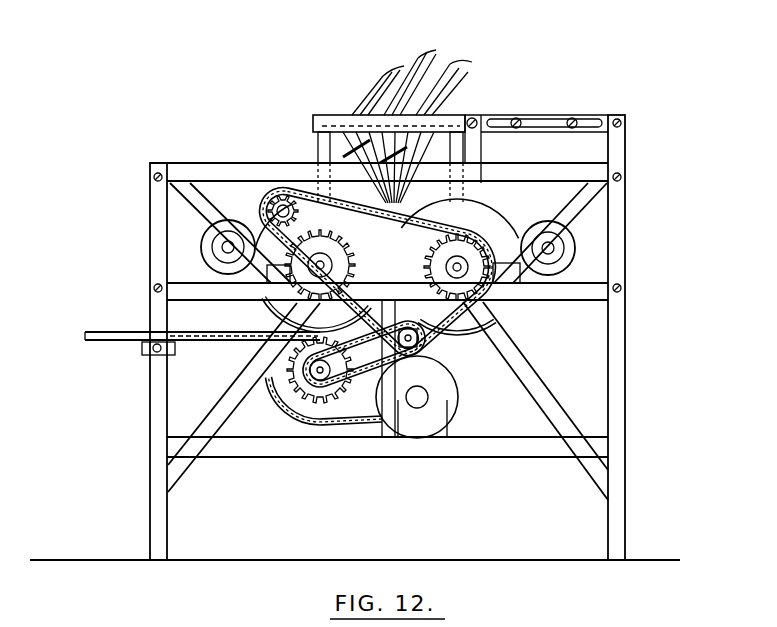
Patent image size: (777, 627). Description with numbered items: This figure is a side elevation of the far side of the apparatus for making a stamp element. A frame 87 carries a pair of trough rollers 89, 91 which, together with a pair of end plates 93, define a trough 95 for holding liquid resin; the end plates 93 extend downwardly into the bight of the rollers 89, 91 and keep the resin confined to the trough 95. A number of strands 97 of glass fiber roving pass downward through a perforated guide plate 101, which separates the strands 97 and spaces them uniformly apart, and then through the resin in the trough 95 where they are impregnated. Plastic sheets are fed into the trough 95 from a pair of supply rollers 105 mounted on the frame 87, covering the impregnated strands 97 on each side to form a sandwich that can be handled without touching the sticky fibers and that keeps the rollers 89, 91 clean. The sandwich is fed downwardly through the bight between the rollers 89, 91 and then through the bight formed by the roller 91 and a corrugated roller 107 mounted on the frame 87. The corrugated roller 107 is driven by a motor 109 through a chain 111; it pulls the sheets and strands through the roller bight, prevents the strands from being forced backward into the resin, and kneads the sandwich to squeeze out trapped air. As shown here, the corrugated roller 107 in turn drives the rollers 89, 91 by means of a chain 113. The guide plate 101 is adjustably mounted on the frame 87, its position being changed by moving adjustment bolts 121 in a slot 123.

The frame 87 is at (157, 410).
The trough roller 89 is at (503, 311).
The trough roller 91 is at (282, 304).
The end plates 93 is at (335, 162).
The trough 95 is at (318, 149).
The strands 97 is at (426, 70).
The guide plate 101 is at (327, 130).
The supply rollers 105 is at (203, 247).
The corrugated roller 107 is at (298, 361).
The motor 109 is at (442, 397).
The chain 111 is at (337, 426).
The chain 113 is at (472, 238).
The adjustment bolts 121 is at (516, 118).
The slot 123 is at (546, 128).